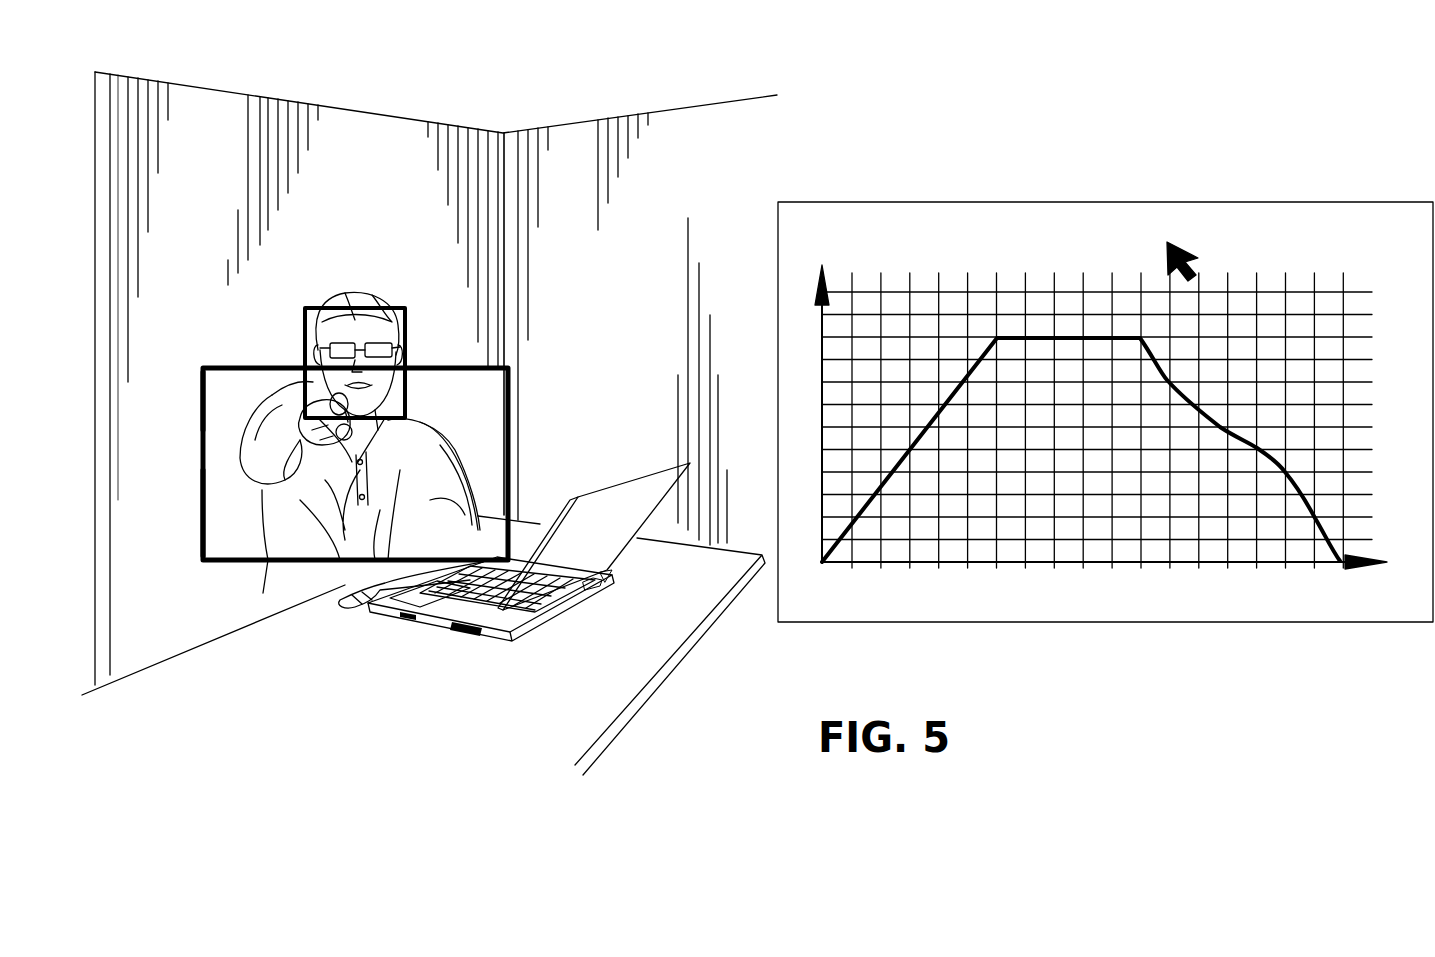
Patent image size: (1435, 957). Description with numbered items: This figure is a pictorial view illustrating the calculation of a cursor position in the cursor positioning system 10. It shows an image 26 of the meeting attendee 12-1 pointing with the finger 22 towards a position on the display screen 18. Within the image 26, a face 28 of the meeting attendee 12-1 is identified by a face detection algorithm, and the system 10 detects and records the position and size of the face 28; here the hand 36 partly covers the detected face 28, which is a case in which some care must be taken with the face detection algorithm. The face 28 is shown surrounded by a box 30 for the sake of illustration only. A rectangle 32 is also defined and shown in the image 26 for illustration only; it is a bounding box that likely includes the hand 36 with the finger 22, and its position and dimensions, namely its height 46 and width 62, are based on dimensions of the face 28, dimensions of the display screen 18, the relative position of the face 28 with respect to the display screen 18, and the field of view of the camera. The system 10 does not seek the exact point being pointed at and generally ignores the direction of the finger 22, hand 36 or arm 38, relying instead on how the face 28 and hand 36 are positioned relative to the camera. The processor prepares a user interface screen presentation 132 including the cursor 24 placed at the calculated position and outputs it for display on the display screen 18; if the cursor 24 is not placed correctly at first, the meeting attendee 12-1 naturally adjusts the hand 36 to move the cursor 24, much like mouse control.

The image 26 is at (384, 97).
The cursor positioning system 10 is at (845, 145).
The user interface screen presentation 132 is at (980, 202).
The display screen 18 is at (1108, 202).
The cursor 24 is at (1176, 240).
The face 28 is at (352, 320).
The box 30 is at (405, 313).
The finger 22 is at (300, 382).
The rectangle 32 is at (203, 394).
The height 46 is at (203, 499).
The arm 38 is at (263, 466).
The hand 36 is at (272, 513).
The meeting attendee 12-1 is at (338, 429).
The width 62 is at (293, 587).